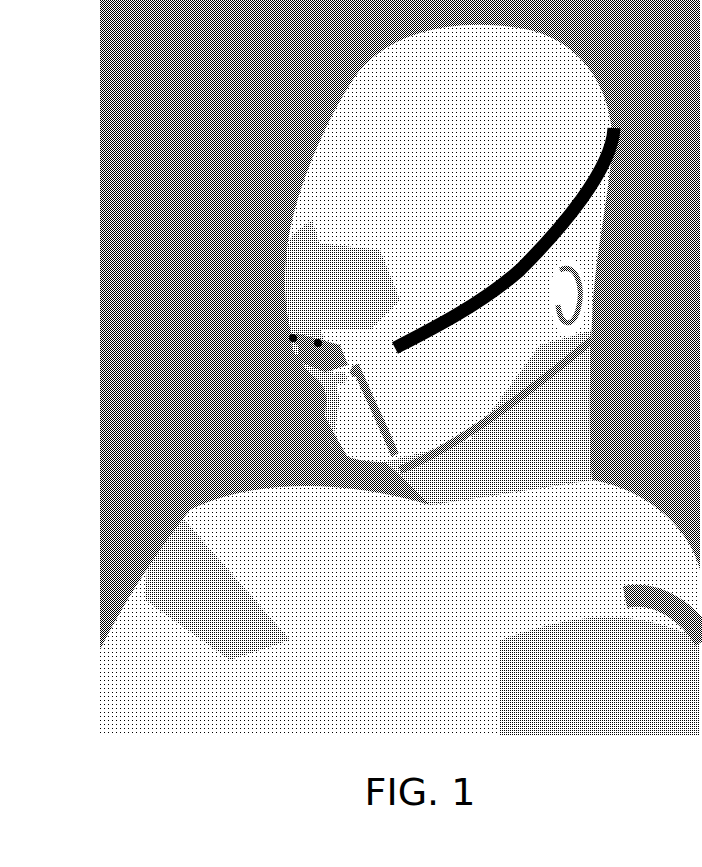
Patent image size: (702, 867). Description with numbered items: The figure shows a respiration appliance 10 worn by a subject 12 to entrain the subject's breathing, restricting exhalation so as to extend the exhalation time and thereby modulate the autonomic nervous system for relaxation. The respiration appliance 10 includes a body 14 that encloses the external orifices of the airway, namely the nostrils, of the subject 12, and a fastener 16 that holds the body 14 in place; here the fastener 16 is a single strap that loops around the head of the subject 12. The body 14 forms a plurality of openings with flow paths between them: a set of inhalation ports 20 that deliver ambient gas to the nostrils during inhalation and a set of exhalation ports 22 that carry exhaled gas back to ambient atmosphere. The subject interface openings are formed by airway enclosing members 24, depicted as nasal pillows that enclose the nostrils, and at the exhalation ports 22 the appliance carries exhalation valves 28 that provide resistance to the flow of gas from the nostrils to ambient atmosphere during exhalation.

The respiration appliance 10 is at (188, 327).
The subject 12 is at (324, 126).
The body 14 is at (268, 346).
The fastener 16 is at (272, 252).
The inhalation ports 20 is at (312, 372).
The exhalation ports 22 is at (255, 332).
The airway enclosing members 24 is at (290, 338).
The exhalation valves 28 is at (240, 338).